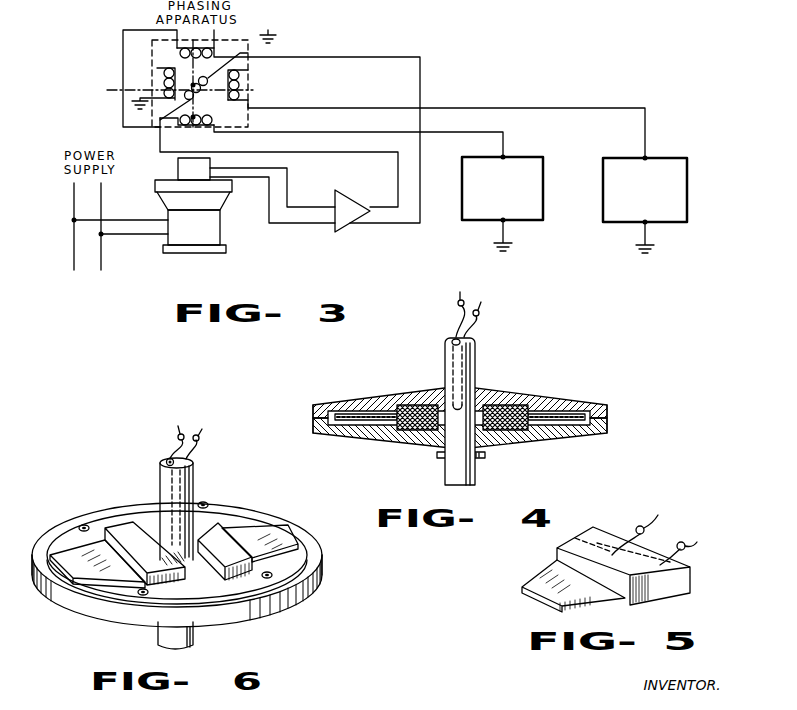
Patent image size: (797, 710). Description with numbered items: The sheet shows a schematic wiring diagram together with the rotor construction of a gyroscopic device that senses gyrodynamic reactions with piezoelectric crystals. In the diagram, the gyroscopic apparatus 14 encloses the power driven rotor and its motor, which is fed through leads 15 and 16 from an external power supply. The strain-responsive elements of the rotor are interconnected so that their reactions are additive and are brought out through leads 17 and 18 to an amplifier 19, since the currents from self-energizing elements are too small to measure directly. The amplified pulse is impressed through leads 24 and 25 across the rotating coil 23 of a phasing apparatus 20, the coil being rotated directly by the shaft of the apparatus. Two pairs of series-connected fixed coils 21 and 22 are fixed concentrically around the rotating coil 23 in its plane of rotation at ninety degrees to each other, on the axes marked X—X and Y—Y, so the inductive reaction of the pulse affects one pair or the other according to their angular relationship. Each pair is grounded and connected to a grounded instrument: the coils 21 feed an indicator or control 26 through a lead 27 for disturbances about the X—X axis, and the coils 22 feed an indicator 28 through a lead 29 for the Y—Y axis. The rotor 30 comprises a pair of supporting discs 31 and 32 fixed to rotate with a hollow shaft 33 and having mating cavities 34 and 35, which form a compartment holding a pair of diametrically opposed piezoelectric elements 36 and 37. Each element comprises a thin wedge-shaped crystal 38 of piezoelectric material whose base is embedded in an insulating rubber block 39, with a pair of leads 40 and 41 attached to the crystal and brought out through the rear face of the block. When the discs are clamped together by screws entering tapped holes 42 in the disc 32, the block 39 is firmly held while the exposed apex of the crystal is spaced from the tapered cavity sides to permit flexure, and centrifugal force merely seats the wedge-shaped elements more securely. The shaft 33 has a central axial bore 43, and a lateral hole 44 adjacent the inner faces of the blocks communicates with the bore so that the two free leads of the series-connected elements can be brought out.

In FIG. 3, the gyroscopic apparatus 14 is at (221, 222).
In FIG. 3, the lead 15 is at (141, 219).
In FIG. 3, the lead 16 is at (120, 236).
In FIG. 3, the lead 17 is at (324, 207).
In FIG. 3, the lead 18 is at (316, 226).
In FIG. 3, the amplifier 19 is at (346, 196).
In FIG. 3, the phasing apparatus 20 is at (248, 67).
In FIG. 3, the fixed coils 21 is at (214, 52).
In FIG. 3, the fixed coils 22 is at (157, 68).
In FIG. 3, the rotating coil 23 is at (203, 98).
In FIG. 3, the lead 24 is at (363, 156).
In FIG. 3, the lead 25 is at (342, 57).
In FIG. 3, the indicator or control 26 is at (527, 157).
In FIG. 3, the lead 27 is at (462, 133).
In FIG. 3, the indicator 28 is at (667, 158).
In FIG. 3, the lead 29 is at (489, 108).
In FIG. 4, the rotor 30 is at (463, 387).
In FIG. 4, the supporting disc 31 is at (463, 415).
In FIG. 4, the supporting disc 32 is at (564, 437).
In FIG. 6, the supporting disc 32 is at (319, 565).
In FIG. 4, the shaft 33 is at (468, 404).
In FIG. 6, the shaft 33 is at (180, 504).
In FIG. 4, the cavity 34 is at (374, 403).
In FIG. 4, the cavity 35 is at (366, 432).
In FIG. 6, the cavity 35 is at (113, 580).
In FIG. 4, the piezoelectric element 36 is at (398, 429).
In FIG. 6, the piezoelectric element 36 is at (178, 557).
In FIG. 5, the piezoelectric element 36 is at (602, 571).
In FIG. 4, the piezoelectric element 37 is at (534, 439).
In FIG. 6, the piezoelectric element 37 is at (252, 527).
In FIG. 4, the crystal 38 is at (562, 415).
In FIG. 6, the crystal 38 is at (82, 583).
In FIG. 5, the crystal 38 is at (531, 601).
In FIG. 4, the block 39 is at (494, 431).
In FIG. 6, the block 39 is at (208, 522).
In FIG. 5, the block 39 is at (668, 592).
In FIG. 4, the lead 40 is at (452, 300).
In FIG. 6, the lead 40 is at (177, 425).
In FIG. 5, the lead 40 is at (645, 531).
In FIG. 4, the lead 41 is at (482, 318).
In FIG. 6, the lead 41 is at (200, 440).
In FIG. 5, the lead 41 is at (690, 555).
In FIG. 6, the tapped holes 42 is at (86, 524).
In FIG. 4, the axial bore 43 is at (454, 340).
In FIG. 6, the axial bore 43 is at (165, 461).
In FIG. 4, the lateral hole 44 is at (452, 393).
In FIG. 6, the lateral hole 44 is at (163, 535).